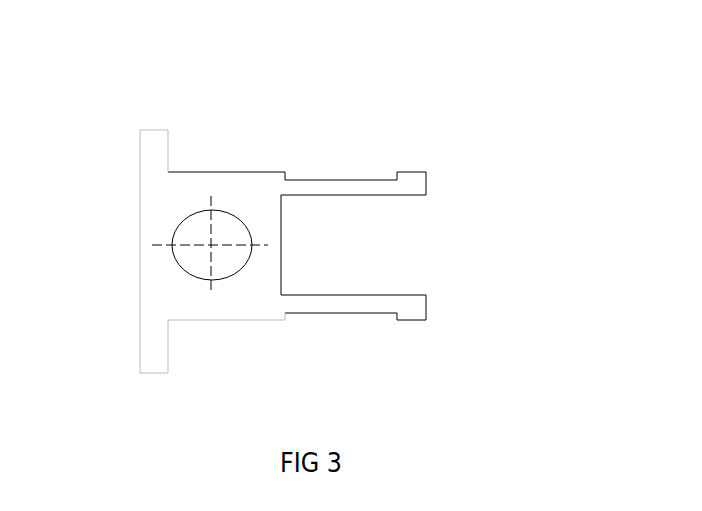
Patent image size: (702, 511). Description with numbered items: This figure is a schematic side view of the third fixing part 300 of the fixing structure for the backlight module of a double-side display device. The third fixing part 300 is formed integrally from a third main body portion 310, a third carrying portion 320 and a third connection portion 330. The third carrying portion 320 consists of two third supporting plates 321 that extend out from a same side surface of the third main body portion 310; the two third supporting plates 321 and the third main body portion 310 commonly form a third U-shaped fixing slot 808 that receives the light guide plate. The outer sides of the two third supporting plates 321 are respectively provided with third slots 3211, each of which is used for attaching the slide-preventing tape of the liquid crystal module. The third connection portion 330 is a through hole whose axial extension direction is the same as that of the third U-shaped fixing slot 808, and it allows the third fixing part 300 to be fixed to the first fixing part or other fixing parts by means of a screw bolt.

The third fixing part 300 is at (282, 55).
The third main body portion 310 is at (192, 312).
The third carrying portion 320 is at (396, 132).
The third supporting plate 321 is at (412, 187).
The third slot 3211 is at (350, 187).
The third connection portion 330 is at (150, 228).
The third U-shaped fixing slot 808 is at (329, 263).